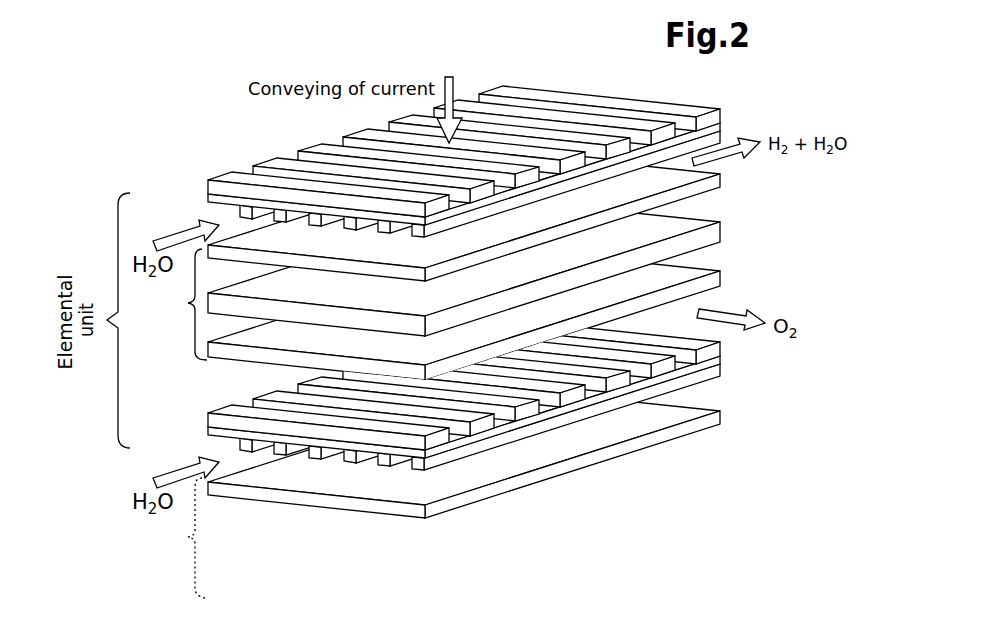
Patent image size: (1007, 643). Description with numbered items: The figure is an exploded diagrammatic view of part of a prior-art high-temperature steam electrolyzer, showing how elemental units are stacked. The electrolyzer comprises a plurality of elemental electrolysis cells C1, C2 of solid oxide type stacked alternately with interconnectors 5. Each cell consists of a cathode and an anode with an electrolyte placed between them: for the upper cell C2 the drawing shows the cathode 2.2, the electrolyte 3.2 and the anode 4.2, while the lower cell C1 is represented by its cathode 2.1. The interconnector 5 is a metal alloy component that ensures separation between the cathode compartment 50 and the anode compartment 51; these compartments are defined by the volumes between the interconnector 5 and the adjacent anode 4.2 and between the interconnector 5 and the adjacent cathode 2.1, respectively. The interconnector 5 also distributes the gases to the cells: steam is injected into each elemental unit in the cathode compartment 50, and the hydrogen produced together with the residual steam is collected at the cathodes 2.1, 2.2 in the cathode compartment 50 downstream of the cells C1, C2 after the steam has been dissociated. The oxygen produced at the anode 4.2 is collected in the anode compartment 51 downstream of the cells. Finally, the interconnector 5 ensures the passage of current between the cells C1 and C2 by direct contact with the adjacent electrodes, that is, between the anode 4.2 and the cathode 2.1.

The cathode 2.1 is at (720, 418).
The cathode 2.2 is at (720, 180).
The electrolyte 3.2 is at (720, 233).
The anode 4.2 is at (720, 282).
The interconnector 5 is at (427, 280).
The cathode compartment 50 is at (208, 204).
The anode compartment 51 is at (240, 382).
The elemental electrolysis cell C1 is at (178, 538).
The elemental electrolysis cell C2 is at (179, 304).